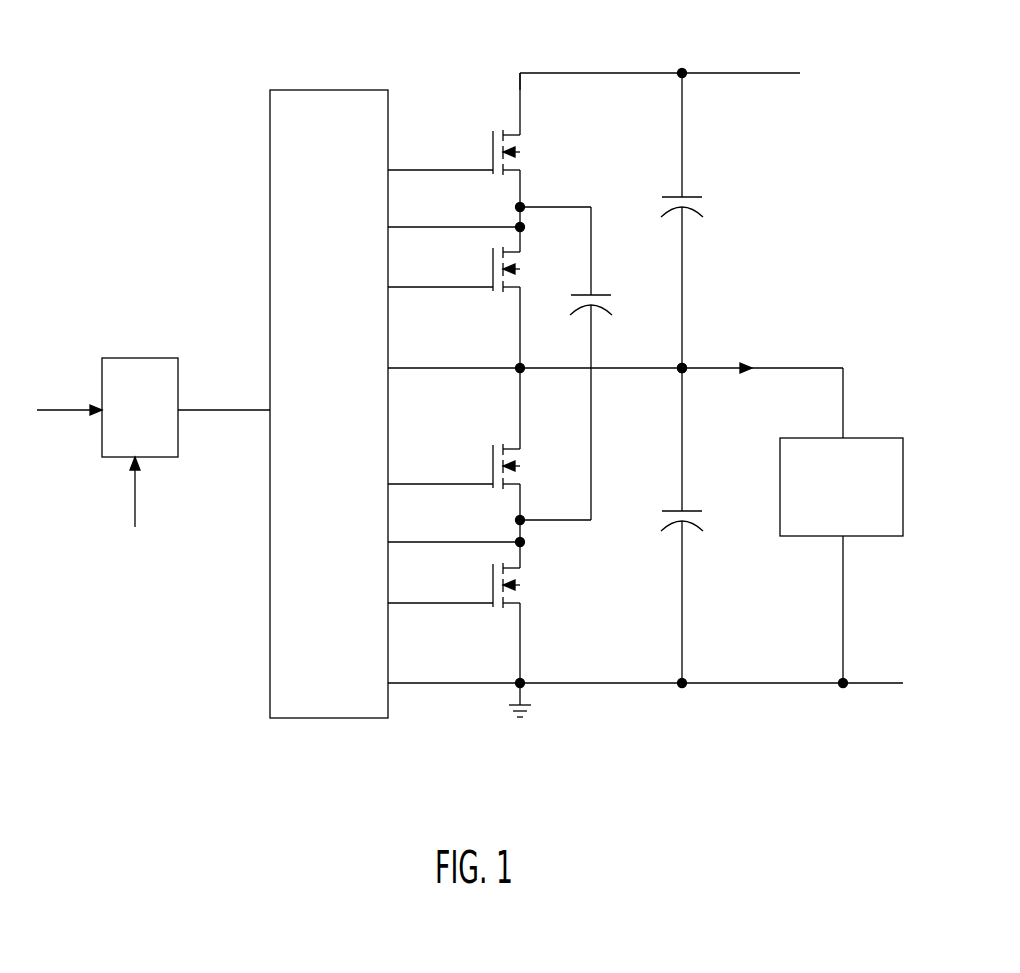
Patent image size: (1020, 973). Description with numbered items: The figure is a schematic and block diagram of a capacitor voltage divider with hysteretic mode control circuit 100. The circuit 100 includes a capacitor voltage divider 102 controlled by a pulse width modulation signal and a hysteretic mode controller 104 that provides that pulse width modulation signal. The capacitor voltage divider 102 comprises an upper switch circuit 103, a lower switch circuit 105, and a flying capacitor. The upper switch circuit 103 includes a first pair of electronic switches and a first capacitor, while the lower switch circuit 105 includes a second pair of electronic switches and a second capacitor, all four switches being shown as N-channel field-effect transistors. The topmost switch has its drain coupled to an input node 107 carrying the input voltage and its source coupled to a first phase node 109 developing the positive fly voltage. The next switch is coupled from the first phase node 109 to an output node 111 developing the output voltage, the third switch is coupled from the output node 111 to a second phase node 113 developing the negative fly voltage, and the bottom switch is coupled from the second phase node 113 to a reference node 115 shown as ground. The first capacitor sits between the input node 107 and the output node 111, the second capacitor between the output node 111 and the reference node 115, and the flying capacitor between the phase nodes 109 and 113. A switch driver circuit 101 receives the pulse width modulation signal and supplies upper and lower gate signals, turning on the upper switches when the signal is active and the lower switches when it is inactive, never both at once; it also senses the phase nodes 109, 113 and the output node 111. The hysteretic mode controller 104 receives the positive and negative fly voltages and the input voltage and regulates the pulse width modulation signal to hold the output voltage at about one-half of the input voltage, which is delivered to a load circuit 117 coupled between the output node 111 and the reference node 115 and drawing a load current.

The capacitor voltage divider with hysteretic mode control circuit 100 is at (470, 398).
The switch driver circuit 101 is at (313, 442).
The capacitor voltage divider 102 is at (672, 40).
The upper switch circuit 103 is at (575, 116).
The hysteretic mode controller 104 is at (123, 421).
The lower switch circuit 105 is at (562, 611).
The input node 107 is at (520, 73).
The first phase node 109 is at (520, 207).
The output node 111 is at (684, 370).
The second phase node 113 is at (520, 520).
The reference node 115 is at (520, 683).
The load circuit 117 is at (825, 498).